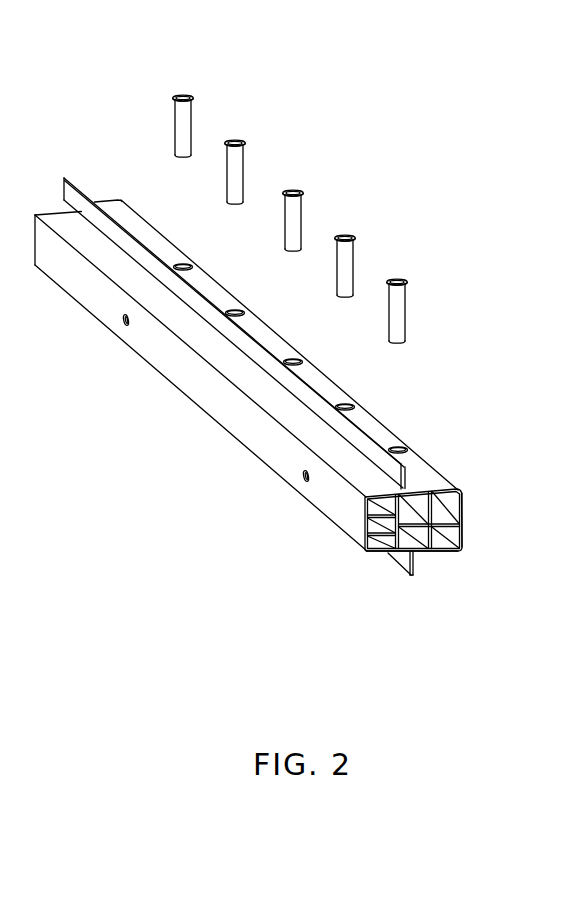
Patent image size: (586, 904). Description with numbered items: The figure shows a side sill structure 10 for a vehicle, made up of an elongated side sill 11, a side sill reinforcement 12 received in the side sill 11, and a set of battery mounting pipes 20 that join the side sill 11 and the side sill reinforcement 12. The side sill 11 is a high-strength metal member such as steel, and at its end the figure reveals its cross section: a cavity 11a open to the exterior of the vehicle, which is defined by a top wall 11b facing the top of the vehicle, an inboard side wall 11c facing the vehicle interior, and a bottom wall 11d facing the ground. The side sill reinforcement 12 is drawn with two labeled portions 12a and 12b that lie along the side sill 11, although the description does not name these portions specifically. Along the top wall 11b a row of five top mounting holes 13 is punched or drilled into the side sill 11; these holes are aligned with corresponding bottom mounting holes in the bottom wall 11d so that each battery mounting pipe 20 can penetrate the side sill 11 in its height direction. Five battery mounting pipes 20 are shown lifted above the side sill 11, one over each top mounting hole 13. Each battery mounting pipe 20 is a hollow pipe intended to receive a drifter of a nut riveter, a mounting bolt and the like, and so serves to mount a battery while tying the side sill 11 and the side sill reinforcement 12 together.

The side sill structure 10 is at (46, 48).
The side sill 11 is at (442, 472).
The cavity 11a is at (458, 555).
The top wall 11b is at (372, 428).
The inboard side wall 11c is at (463, 517).
The bottom wall 11d is at (438, 556).
The side sill reinforcement 12 is at (201, 382).
The vertical portion of bracket 12a is at (253, 440).
The horizontal portion of bracket 12b is at (235, 373).
The top mounting holes 13 is at (182, 264).
The battery mounting pipe 20 is at (187, 115).